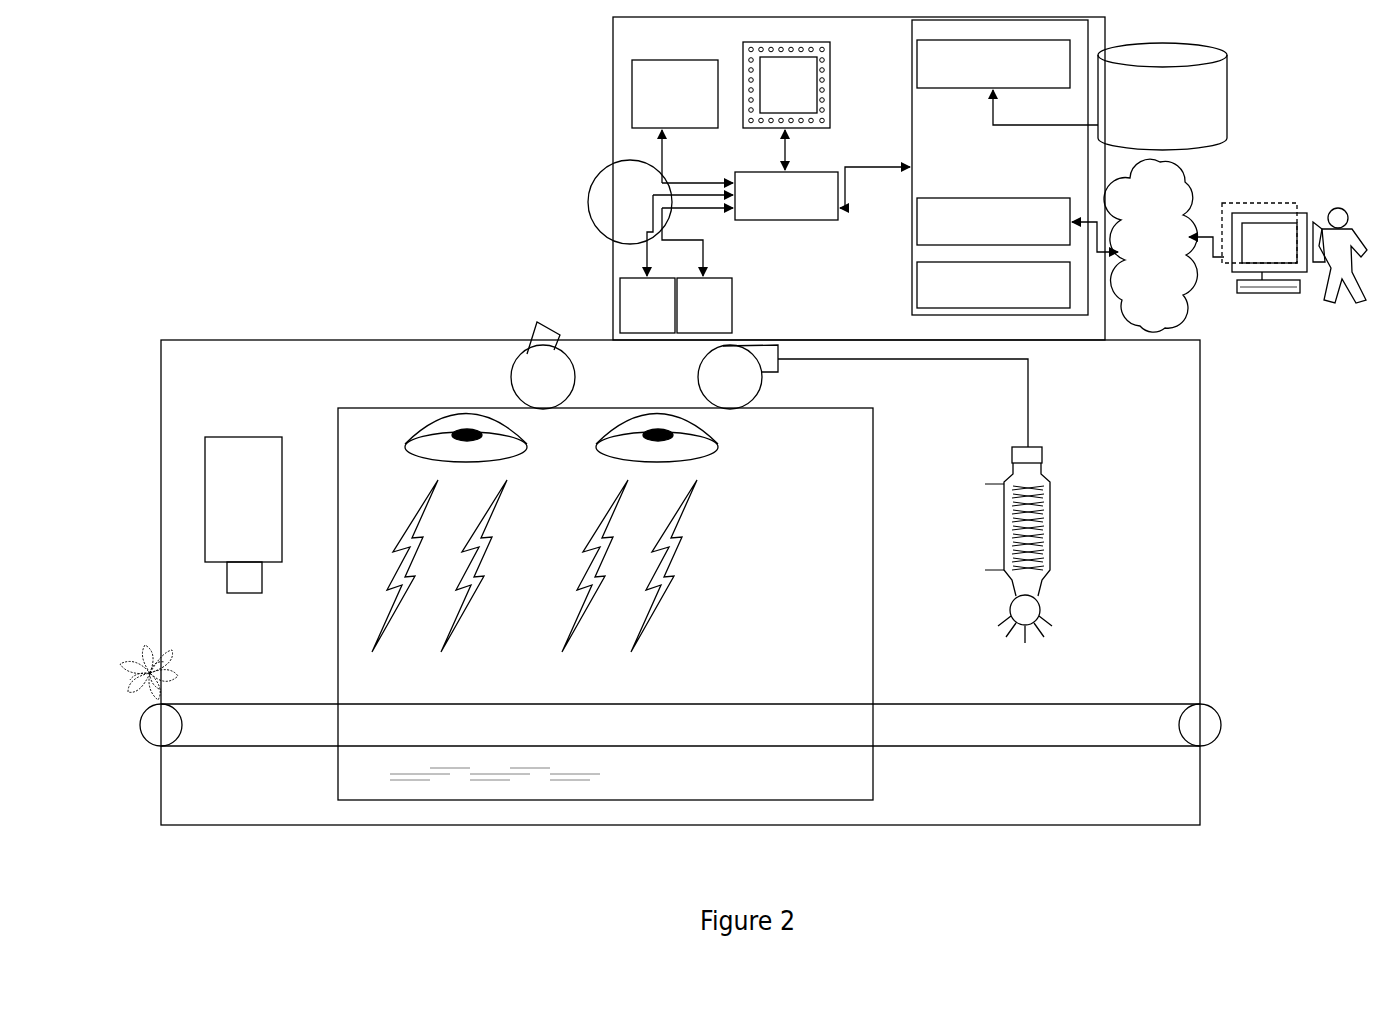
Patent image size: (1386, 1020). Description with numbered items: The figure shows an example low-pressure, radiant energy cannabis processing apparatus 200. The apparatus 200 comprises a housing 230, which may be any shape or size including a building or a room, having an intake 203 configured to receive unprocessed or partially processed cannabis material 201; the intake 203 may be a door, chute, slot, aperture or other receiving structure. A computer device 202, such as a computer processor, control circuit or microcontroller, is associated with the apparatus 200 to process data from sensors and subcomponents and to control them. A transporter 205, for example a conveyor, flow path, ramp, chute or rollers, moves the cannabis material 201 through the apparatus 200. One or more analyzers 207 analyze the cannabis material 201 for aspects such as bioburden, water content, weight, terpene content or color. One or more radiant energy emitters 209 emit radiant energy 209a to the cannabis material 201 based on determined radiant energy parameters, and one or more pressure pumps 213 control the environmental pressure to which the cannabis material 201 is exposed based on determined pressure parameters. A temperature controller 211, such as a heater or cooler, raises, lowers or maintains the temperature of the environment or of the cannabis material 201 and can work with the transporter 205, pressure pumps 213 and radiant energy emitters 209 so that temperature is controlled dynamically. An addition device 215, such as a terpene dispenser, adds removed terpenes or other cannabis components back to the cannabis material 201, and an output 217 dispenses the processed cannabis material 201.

The apparatus 200 is at (681, 543).
The cannabis material 201 is at (140, 663).
The computer device 202 is at (977, 178).
The intake 203 is at (149, 738).
The transporter 205 is at (680, 725).
The analyzer 207 is at (243, 515).
The radiant energy emitter 209 is at (561, 438).
The radiant energy 209a is at (534, 566).
The temperature controller 211 is at (514, 775).
The pressure pump 213 is at (769, 384).
The addition device 215 is at (1040, 545).
The output 217 is at (1220, 735).
The housing 230 is at (397, 338).